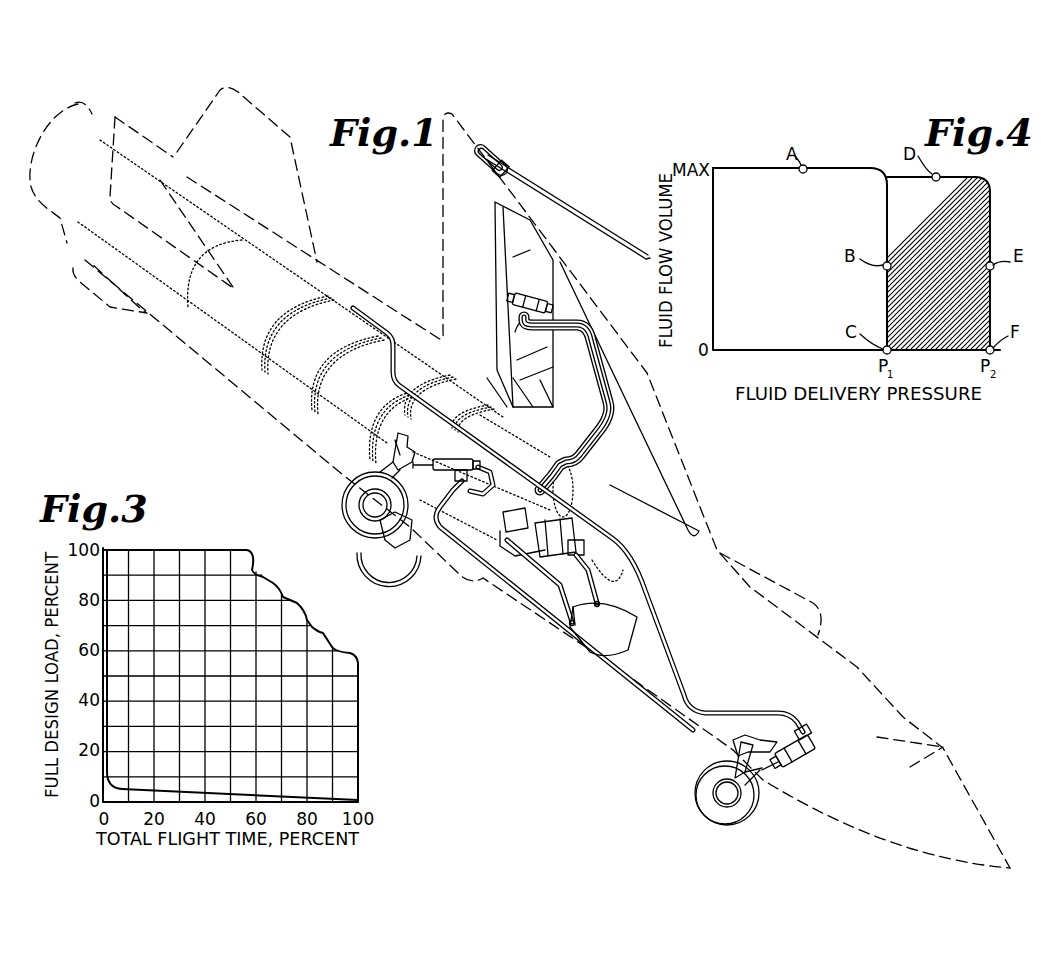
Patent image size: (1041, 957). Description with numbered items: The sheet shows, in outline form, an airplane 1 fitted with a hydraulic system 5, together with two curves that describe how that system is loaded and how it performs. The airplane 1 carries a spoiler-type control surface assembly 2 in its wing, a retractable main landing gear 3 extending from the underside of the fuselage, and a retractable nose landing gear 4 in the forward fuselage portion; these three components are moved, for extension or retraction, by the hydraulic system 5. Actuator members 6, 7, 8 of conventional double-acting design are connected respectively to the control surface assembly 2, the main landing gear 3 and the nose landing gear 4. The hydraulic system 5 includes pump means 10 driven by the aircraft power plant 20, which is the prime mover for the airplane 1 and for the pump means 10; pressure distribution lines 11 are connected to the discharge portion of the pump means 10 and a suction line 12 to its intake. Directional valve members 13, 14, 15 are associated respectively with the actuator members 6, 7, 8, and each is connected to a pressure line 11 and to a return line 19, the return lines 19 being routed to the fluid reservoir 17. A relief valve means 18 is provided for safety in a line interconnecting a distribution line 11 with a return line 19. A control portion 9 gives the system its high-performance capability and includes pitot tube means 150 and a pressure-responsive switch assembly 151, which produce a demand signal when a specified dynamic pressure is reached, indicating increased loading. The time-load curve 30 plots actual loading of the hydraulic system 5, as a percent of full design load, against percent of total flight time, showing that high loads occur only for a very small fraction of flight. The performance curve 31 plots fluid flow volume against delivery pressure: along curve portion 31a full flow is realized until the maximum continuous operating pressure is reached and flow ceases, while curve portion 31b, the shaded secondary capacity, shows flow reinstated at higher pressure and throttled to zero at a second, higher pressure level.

In FIG. 1, the airplane 1 is at (698, 483).
In FIG. 1, the spoiler-type control surface assembly 2 is at (500, 290).
In FIG. 1, the retractable main landing gear 3 is at (385, 467).
In FIG. 1, the retractable nose landing gear 4 is at (762, 782).
In FIG. 1, the hydraulic system 5 is at (652, 584).
In FIG. 1, the actuator member 6 is at (527, 297).
In FIG. 1, the actuator member 7 is at (452, 462).
In FIG. 1, the actuator member 8 is at (792, 764).
In FIG. 1, the control portion 9 is at (555, 537).
In FIG. 1, the pump means 10 is at (510, 553).
In FIG. 1, the pressure distribution lines 11 is at (397, 352).
In FIG. 1, the suction line 12 is at (552, 583).
In FIG. 1, the directional valve member 13 is at (514, 332).
In FIG. 1, the directional valve member 14 is at (455, 478).
In FIG. 1, the directional valve member 15 is at (806, 736).
In FIG. 1, the fluid reservoir 17 is at (614, 636).
In FIG. 1, the relief valve means 18 is at (584, 573).
In FIG. 1, the return lines 19 is at (394, 362).
In FIG. 1, the aircraft power plant 20 is at (352, 405).
In FIG. 3, the time-load curve 30 is at (237, 792).
In FIG. 4, the performance curve 31 is at (877, 303).
In FIG. 4, the curve portion 31a is at (886, 222).
In FIG. 4, the curve portion 31b is at (992, 206).
In FIG. 1, the pitot tube means 150 is at (583, 207).
In FIG. 1, the pressure-responsive switch assembly 151 is at (513, 180).